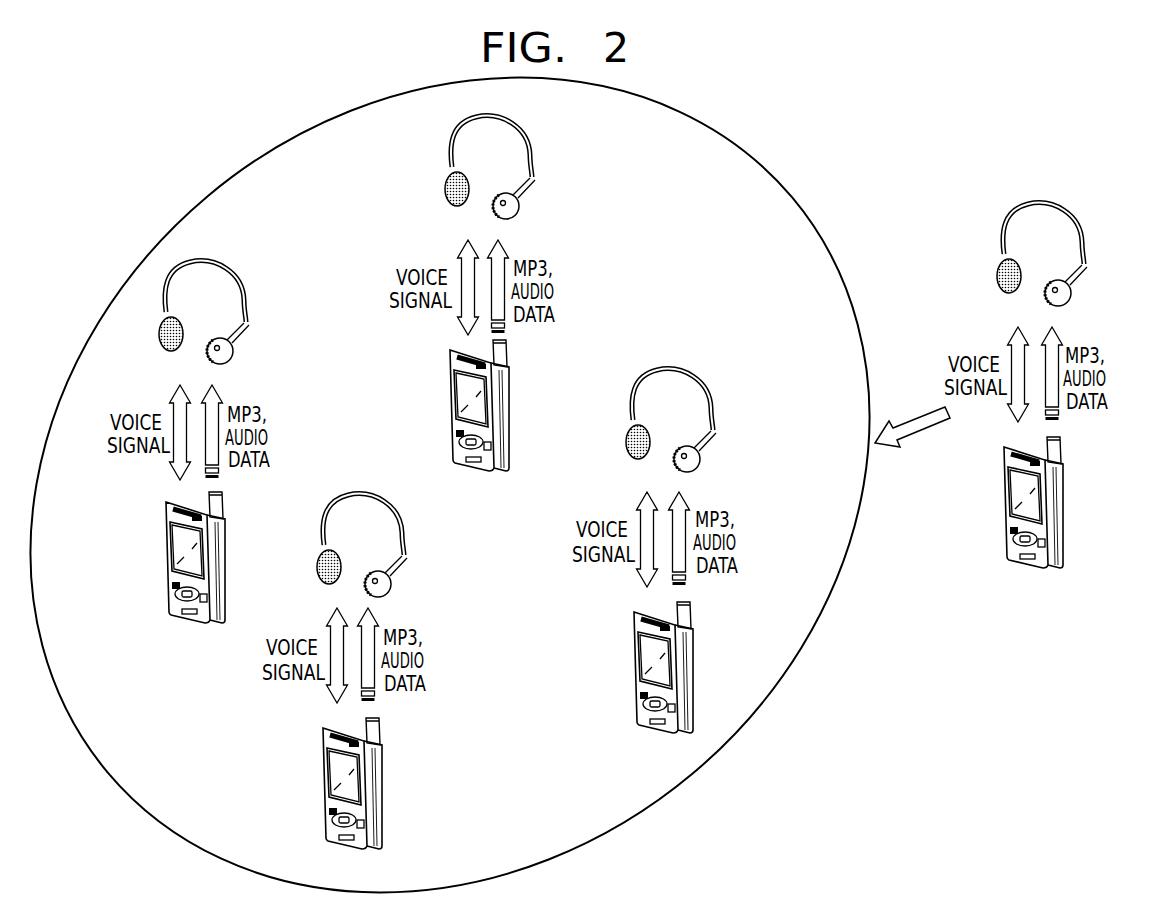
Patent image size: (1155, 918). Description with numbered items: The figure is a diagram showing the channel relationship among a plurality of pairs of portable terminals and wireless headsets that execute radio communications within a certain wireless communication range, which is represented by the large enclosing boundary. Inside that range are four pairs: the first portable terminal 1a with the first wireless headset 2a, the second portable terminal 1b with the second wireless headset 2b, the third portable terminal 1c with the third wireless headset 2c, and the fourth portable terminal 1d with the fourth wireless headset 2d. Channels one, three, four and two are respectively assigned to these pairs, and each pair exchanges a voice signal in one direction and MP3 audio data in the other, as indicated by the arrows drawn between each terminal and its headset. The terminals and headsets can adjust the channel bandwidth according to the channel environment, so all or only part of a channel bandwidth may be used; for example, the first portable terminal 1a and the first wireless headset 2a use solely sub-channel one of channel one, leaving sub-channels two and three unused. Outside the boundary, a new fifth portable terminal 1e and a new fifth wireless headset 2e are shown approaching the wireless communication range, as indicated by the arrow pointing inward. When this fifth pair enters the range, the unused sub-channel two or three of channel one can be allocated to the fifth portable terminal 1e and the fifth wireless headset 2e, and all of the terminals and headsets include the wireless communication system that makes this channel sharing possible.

The first portable terminal 1a is at (448, 372).
The second portable terminal 1b is at (164, 524).
The third portable terminal 1c is at (321, 750).
The fourth portable terminal 1d is at (632, 634).
The fifth portable terminal 1e is at (1002, 469).
The first wireless headset 2a is at (530, 122).
The second wireless headset 2b is at (244, 267).
The third wireless headset 2c is at (402, 500).
The fourth wireless headset 2d is at (711, 375).
The fifth wireless headset 2e is at (1082, 209).